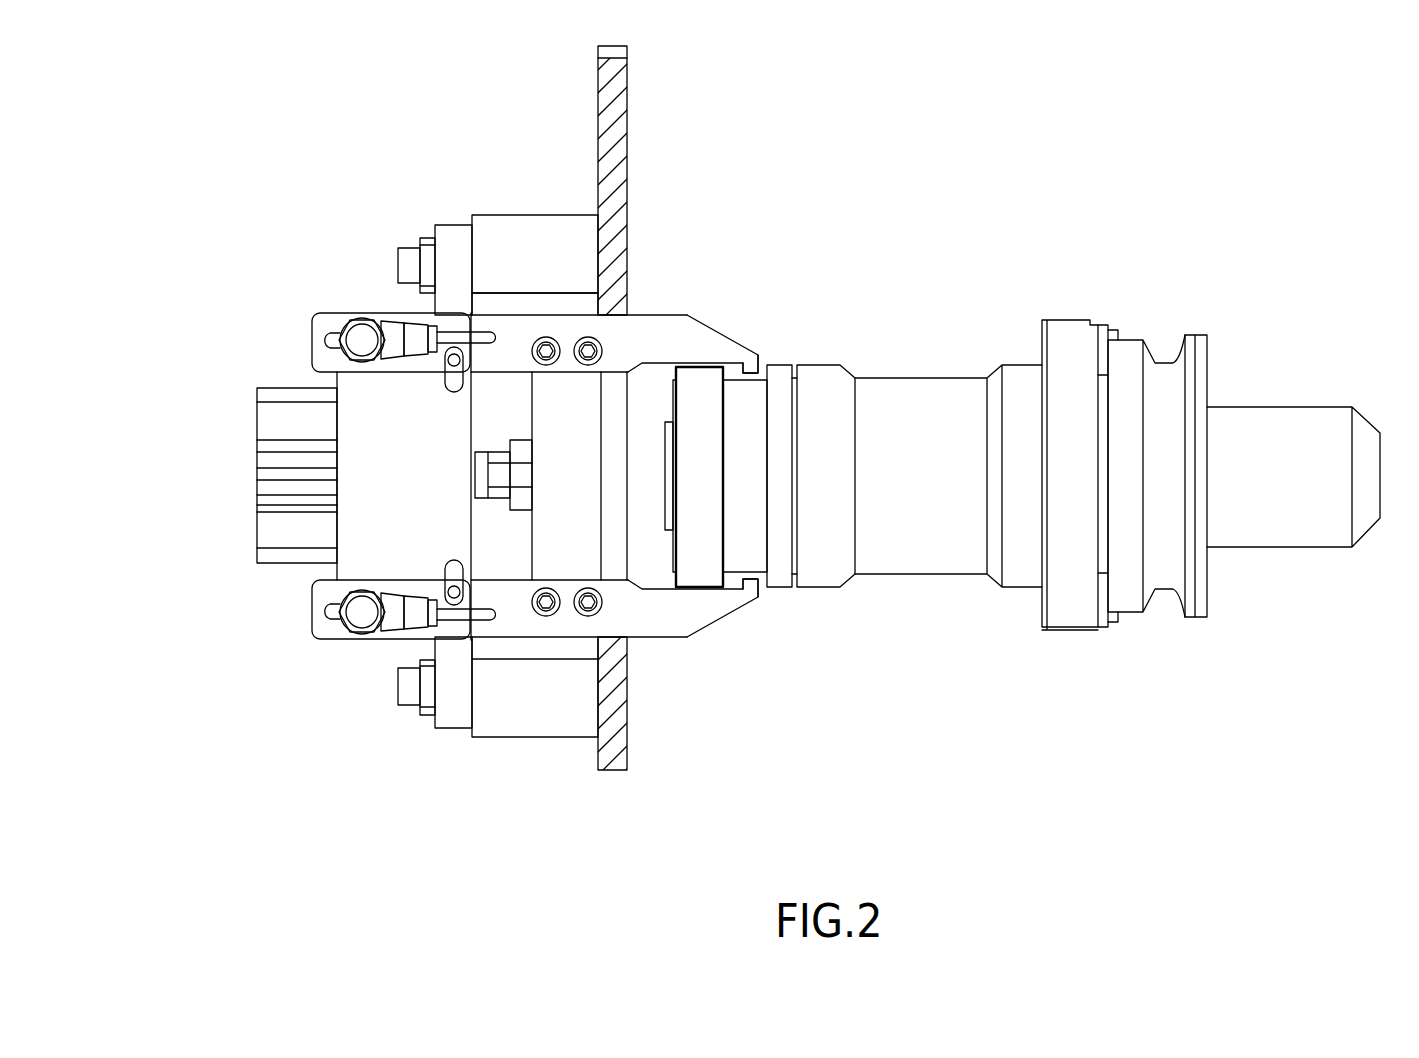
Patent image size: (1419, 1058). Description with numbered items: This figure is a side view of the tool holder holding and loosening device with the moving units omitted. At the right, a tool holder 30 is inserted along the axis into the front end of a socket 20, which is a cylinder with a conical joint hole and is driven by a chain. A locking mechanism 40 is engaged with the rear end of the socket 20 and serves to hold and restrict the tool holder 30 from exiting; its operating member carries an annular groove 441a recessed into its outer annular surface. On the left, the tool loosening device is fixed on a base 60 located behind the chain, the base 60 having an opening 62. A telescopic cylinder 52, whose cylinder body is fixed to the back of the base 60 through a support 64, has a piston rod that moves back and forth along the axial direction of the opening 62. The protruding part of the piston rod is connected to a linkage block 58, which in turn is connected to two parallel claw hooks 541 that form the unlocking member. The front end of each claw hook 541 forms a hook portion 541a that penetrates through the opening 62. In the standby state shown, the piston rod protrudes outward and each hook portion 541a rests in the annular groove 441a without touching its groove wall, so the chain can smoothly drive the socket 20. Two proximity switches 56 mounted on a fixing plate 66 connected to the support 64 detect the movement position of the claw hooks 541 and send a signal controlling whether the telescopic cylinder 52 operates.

The socket 20 is at (935, 579).
The tool holder 30 is at (1283, 404).
The locking mechanism 40 is at (674, 562).
The annular groove 441a is at (750, 438).
The telescopic cylinder 52 is at (255, 420).
The claw hook 541 is at (692, 342).
The hook portion 541a is at (752, 362).
The proximity switch 56 is at (385, 332).
The linkage block 58 is at (571, 565).
The base 60 is at (629, 81).
The opening 62 is at (620, 307).
The support 64 is at (455, 248).
The fixing plate 66 is at (358, 390).